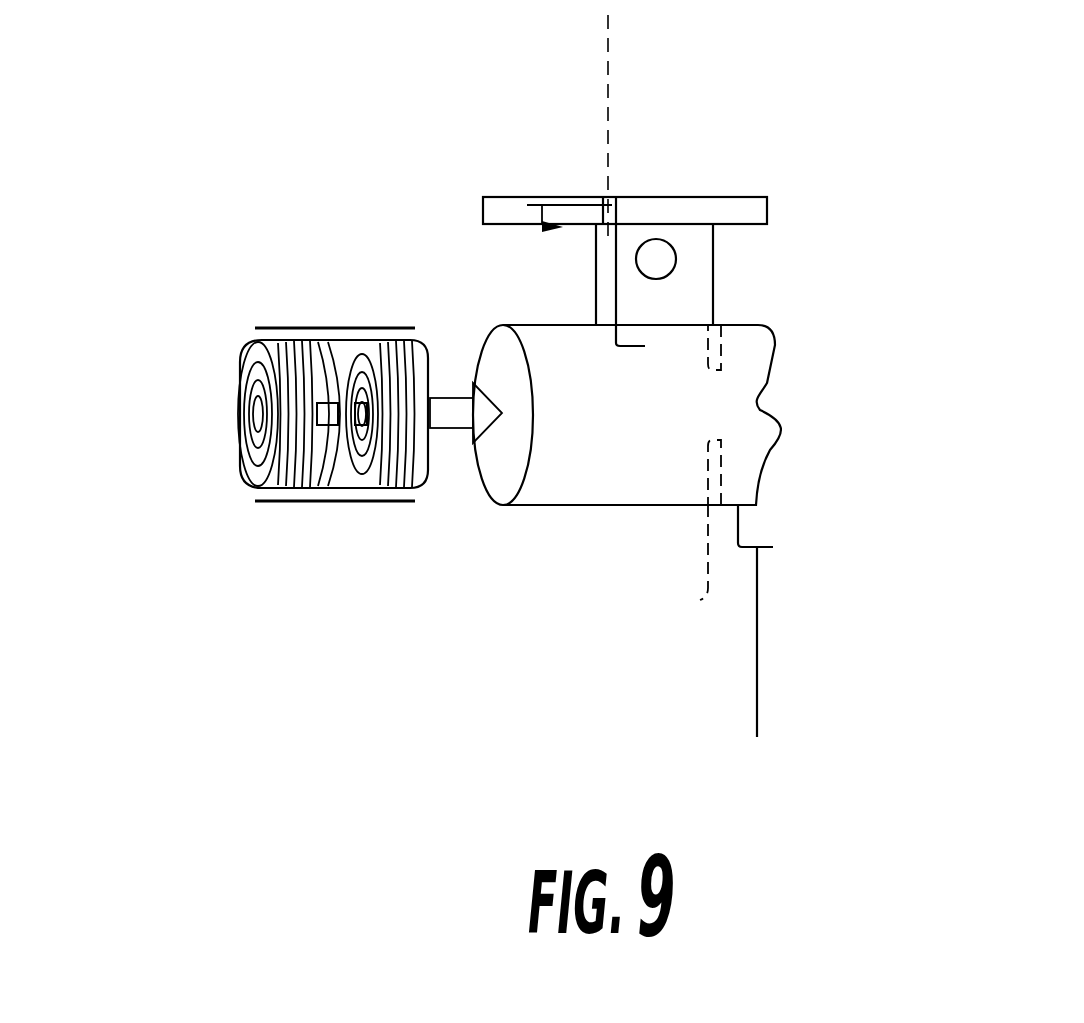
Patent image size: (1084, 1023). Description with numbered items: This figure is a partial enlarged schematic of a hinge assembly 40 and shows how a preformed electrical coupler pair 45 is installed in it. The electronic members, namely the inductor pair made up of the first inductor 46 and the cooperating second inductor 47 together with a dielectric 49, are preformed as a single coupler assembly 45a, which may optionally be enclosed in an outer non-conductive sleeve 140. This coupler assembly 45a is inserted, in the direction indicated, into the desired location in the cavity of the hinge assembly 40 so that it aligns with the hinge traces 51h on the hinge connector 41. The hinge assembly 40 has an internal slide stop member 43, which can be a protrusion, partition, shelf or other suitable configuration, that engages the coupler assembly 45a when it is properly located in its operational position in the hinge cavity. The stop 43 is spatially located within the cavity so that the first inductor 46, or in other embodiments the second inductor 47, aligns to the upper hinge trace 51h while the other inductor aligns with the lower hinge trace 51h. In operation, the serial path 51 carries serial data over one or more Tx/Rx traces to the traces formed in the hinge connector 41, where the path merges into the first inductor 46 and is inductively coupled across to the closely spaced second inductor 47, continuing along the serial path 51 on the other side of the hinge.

The hinge assembly 40 is at (845, 182).
The hinge connector 41 is at (603, 234).
The slide stop member 43 is at (700, 600).
The electrical coupler pair 45 is at (178, 412).
The coupler assembly 45a is at (280, 296).
The first inductor 46 is at (279, 490).
The second inductor 47 is at (393, 490).
The dielectric 49 is at (322, 490).
The serial path 51 is at (760, 708).
The hinge trace 51h is at (618, 238).
The outer non-conductive sleeve 140 is at (347, 327).